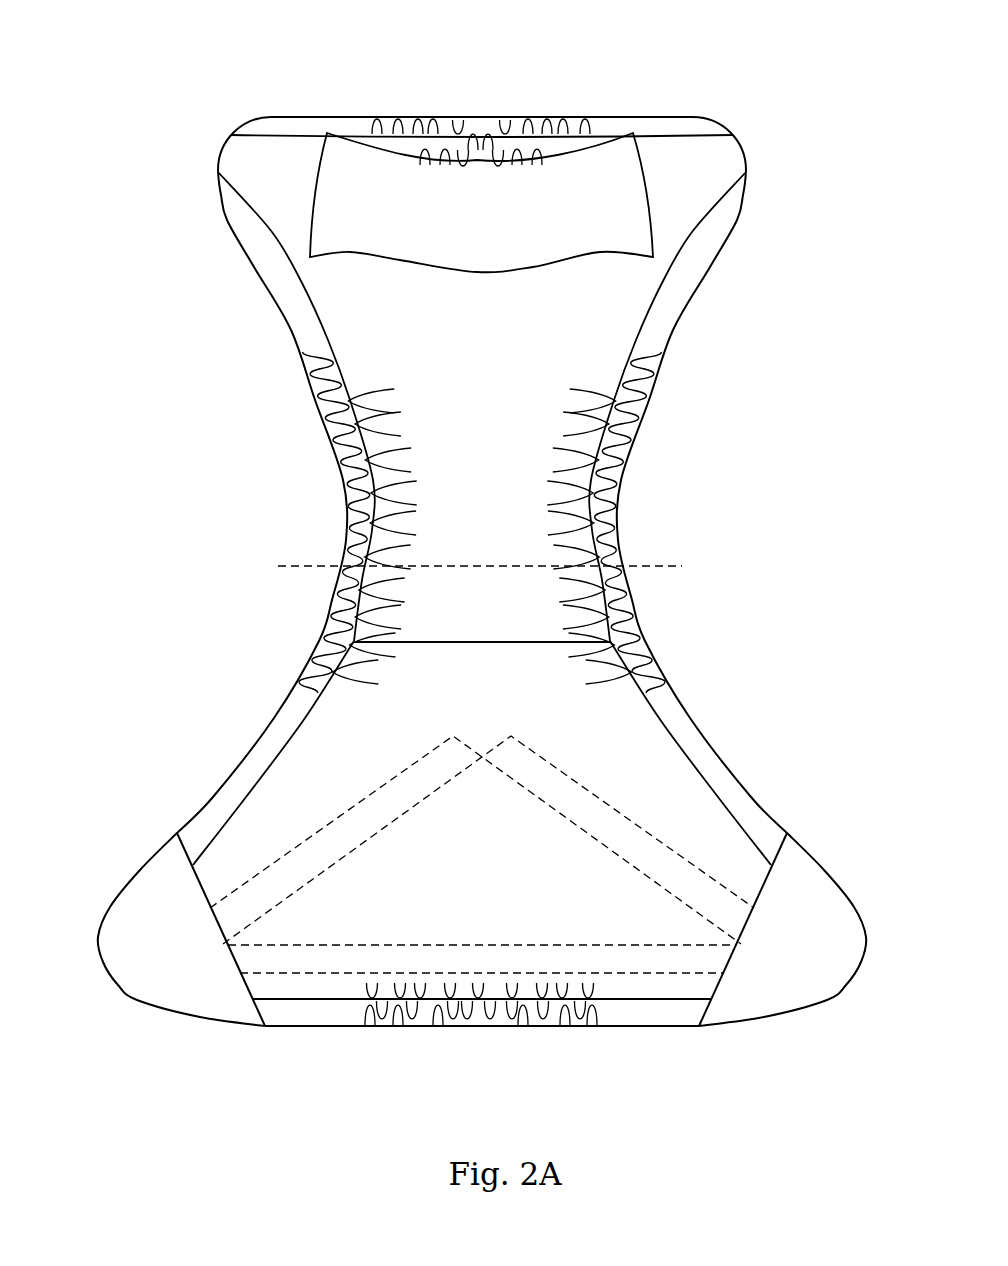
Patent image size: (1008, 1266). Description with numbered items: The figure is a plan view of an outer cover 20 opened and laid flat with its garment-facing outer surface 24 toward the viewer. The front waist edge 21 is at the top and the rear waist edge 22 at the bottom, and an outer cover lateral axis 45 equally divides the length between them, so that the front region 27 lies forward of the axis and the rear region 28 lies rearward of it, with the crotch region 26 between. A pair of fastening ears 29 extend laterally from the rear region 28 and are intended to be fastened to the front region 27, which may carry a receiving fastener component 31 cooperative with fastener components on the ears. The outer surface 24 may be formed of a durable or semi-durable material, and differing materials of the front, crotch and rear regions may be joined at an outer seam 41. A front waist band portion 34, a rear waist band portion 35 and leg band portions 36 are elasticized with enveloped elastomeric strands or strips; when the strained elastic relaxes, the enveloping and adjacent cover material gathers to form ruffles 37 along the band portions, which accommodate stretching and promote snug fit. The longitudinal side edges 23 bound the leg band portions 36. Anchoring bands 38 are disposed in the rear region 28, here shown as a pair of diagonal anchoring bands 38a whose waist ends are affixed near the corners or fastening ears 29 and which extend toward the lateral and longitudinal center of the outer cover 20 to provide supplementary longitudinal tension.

The outer cover 20 is at (727, 498).
The front waist edge 21 is at (528, 118).
The rear waist edge 22 is at (545, 1027).
The longitudinal side edge fastening strips 23 is at (318, 390).
The outer surface 24 is at (494, 341).
The crotch region 26 is at (509, 476).
The front region 27 is at (688, 189).
The rear region 28 is at (628, 921).
The fastening ears 29 is at (132, 1000).
The receiving fastener component 31 is at (618, 190).
The front waist band portion 34 is at (297, 127).
The rear waist band portion 35 is at (647, 1023).
The leg band portions 36 is at (278, 737).
The ruffles 37 is at (429, 120).
The anchoring bands 38 is at (343, 960).
The diagonal anchoring bands 38a is at (323, 850).
The outer seam 41 is at (527, 642).
The outer cover lateral axis 45 is at (643, 563).